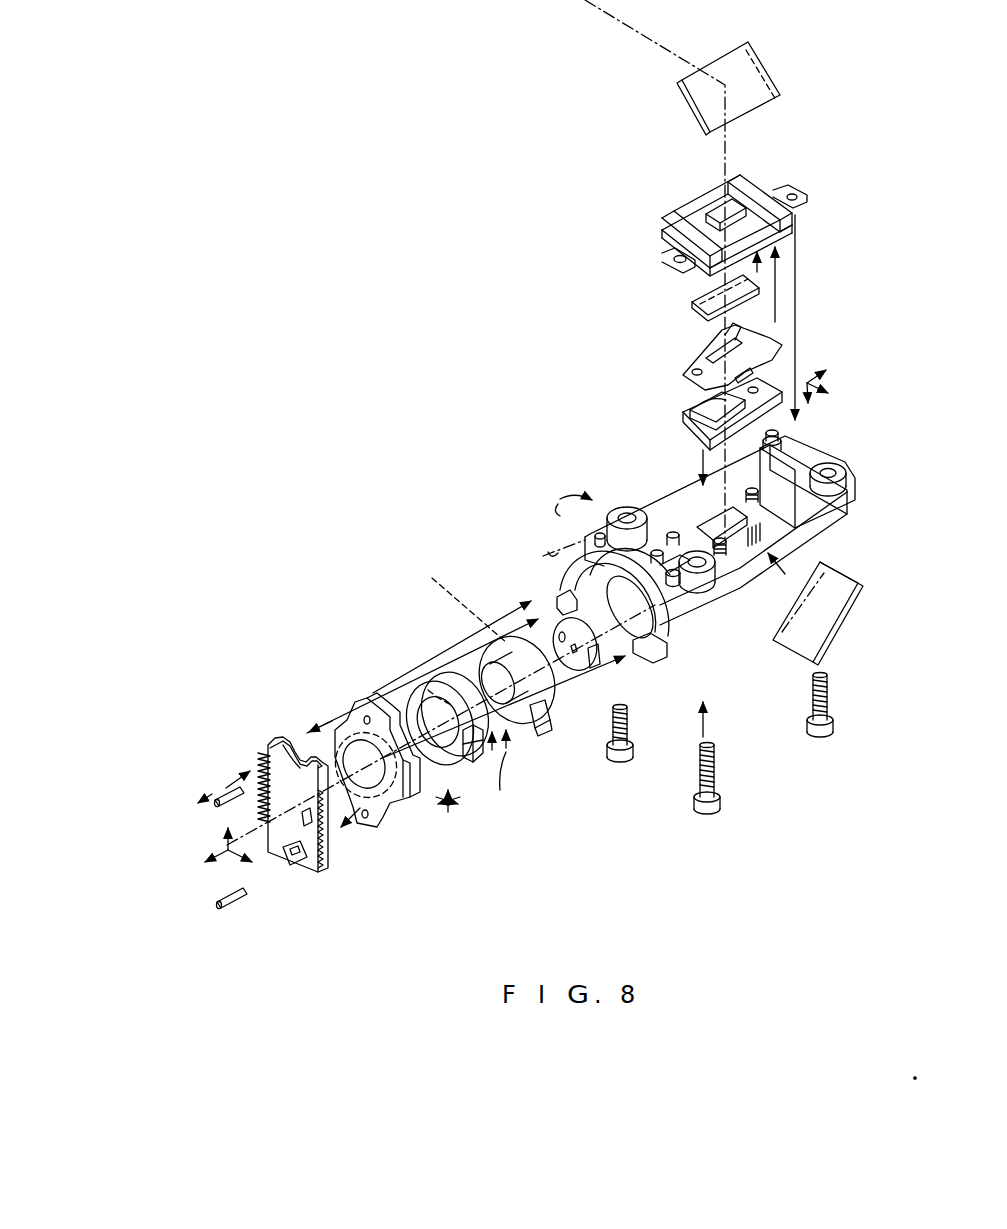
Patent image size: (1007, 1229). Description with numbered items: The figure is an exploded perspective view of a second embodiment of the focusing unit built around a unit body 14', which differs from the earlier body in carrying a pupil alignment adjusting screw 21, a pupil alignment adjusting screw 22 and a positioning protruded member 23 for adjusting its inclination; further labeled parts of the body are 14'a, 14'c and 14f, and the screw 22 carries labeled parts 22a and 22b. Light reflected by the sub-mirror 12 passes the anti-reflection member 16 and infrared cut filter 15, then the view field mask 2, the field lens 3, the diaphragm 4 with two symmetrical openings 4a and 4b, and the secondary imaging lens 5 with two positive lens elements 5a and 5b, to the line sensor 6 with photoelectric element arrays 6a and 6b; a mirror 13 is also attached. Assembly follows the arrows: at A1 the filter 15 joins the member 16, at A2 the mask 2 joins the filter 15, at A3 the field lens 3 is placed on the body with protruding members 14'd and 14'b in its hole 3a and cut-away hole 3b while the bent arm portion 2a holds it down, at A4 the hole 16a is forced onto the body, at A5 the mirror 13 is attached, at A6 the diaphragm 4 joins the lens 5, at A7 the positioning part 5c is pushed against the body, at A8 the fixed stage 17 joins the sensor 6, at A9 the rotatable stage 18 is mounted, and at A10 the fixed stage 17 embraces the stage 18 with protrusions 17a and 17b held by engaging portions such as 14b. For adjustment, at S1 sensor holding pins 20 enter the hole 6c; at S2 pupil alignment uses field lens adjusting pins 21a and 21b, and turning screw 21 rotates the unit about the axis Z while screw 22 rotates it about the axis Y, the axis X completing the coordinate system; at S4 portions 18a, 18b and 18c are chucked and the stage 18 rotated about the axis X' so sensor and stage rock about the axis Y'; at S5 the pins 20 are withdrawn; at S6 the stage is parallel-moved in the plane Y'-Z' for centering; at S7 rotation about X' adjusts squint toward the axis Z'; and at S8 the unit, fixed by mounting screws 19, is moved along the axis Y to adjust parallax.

The sub-mirror 12 is at (708, 95).
The anti-reflection member 16 is at (693, 224).
The hole in the anti-reflection member 16a is at (790, 192).
The infrared cut filter 15 is at (692, 306).
The assembly procedure arrow A1 is at (758, 268).
The assembly procedure arrow A2 is at (777, 287).
The assembly procedure arrow A3 is at (685, 467).
The assembly procedure arrow A4 is at (817, 317).
The assembly procedure arrow A5 is at (778, 574).
The assembly procedure arrow A6 is at (478, 604).
The assembly procedure arrow A7 is at (505, 706).
The assembly procedure arrow A8 is at (357, 834).
The assembly procedure arrow A9 is at (462, 660).
The assembly procedure arrow A10 is at (382, 692).
The view field mask 2 is at (683, 376).
The bent arm portion of the view field mask 2a is at (722, 334).
The field lens 3 is at (688, 414).
The hole in the field lens 3a is at (748, 390).
The cut-away hole in the field lens 3b is at (688, 424).
The X axis X is at (817, 405).
The axis Y is at (827, 398).
The axis Z is at (830, 366).
The pupil alignment adjusting screw 22 is at (790, 456).
The arm ring boss 22a is at (808, 505).
The arm pivot screw 22b is at (782, 437).
The unit body 14' is at (716, 535).
The base boss 14'a is at (740, 532).
The protruding member of the unit body 14'b is at (614, 652).
The base boss 14'c is at (667, 570).
The protruding member of the unit body 14'd is at (694, 540).
The engaging portion of the unit body 14b is at (565, 587).
The base post 14f is at (735, 612).
The positioning protruded member 23 is at (596, 536).
The pupil alignment adjusting screw 21 is at (688, 598).
The field lens adjusting pin 21a is at (676, 600).
The field lens adjusting pin 21b is at (693, 628).
The mounting and parallax adjustment procedure S8 is at (558, 499).
The pupil alignment adjustment procedure S2 is at (557, 538).
The inclination adjustment procedure S4 is at (485, 759).
The squint adjustment procedure S7 is at (502, 784).
The centering adjustment procedure S6 is at (450, 820).
The sensor positioning procedure S1 is at (240, 787).
The pin withdrawal procedure S5 is at (192, 787).
The mirror 13 is at (830, 618).
The mounting screw 19 is at (628, 763).
The diaphragm 4 is at (560, 630).
The diaphragm opening 4a is at (576, 655).
The diaphragm opening 4b is at (592, 670).
The secondary imaging lens 5 is at (485, 660).
The positive lens element 5a is at (460, 598).
The positive lens element 5b is at (545, 724).
The positioning part of the secondary imaging lens 5c is at (537, 738).
The rotatable stage 18 is at (428, 680).
The portion of the rotatable stage 18a is at (428, 690).
The portion of the rotatable stage 18b is at (468, 770).
The portion of the rotatable stage 18c is at (510, 755).
The fixed stage 17 is at (357, 702).
The protrusion of the fixed stage 17a is at (340, 730).
The protrusion of the fixed stage 17b is at (406, 800).
The line sensor 6 is at (268, 748).
The photoelectric element array 6a is at (280, 742).
The photoelectric element array 6b is at (300, 748).
The hole in the line sensor 6c is at (293, 866).
The sensor holding pin 20 is at (232, 790).
The axis X' is at (207, 872).
The axis Y' is at (236, 868).
The axis Z' is at (216, 830).